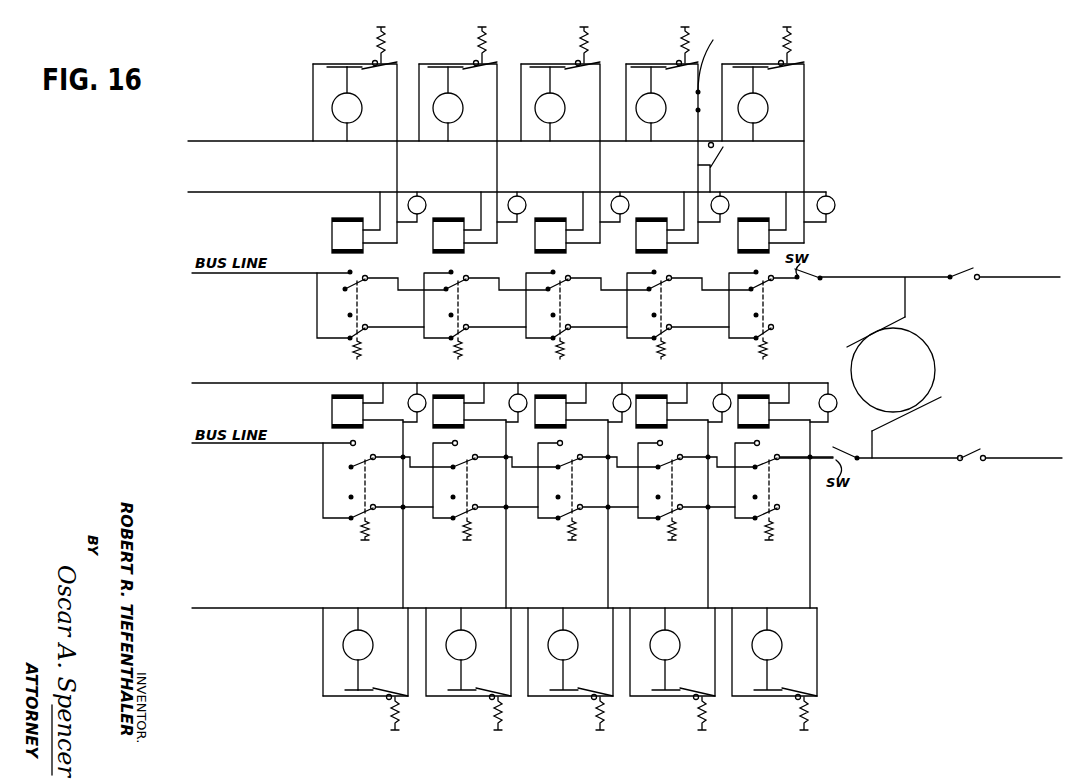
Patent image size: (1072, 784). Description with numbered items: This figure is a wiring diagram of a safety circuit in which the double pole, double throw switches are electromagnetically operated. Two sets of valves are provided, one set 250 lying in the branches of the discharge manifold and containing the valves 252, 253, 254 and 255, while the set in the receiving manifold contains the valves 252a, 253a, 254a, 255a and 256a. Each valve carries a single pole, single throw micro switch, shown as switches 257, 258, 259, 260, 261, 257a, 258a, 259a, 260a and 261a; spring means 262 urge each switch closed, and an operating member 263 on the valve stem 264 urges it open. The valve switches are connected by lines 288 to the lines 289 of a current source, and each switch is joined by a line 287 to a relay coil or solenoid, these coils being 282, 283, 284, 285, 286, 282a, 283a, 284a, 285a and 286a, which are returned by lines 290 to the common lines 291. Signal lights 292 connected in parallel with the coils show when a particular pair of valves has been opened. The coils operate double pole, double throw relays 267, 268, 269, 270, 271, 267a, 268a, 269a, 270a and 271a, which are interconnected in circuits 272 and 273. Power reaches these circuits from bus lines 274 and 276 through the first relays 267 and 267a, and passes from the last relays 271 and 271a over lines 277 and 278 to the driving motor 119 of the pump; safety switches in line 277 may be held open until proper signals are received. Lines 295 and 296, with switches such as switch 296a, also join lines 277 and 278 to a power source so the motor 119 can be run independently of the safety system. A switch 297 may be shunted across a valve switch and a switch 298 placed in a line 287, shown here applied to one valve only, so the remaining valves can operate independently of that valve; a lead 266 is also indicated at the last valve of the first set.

The driving motor 119 is at (934, 355).
The set of valves 250 is at (778, 106).
The valve 252 is at (342, 119).
The valve 253 is at (443, 119).
The valve 254 is at (545, 119).
The valve 255 is at (646, 119).
The single pole, single throw switch 257 is at (377, 78).
The single pole, single throw switch 258 is at (470, 78).
The single pole, single throw switch 259 is at (572, 78).
The single pole, single throw switch 260 is at (671, 78).
The single pole, single throw switch 261 is at (828, 655).
The spring means 262 is at (482, 27).
The operating member 263 is at (345, 690).
The valve stem 264 is at (352, 66).
The voltmeter lead 266 is at (750, 146).
The double pole, double throw relay 267 is at (395, 315).
The double pole, double throw relay 268 is at (485, 315).
The double pole, double throw relay 269 is at (587, 315).
The double pole, double throw relay 270 is at (689, 315).
The double pole, double throw relay 271 is at (768, 315).
The double pole, double throw relay 267a is at (379, 483).
The double pole, double throw relay 268a is at (481, 483).
The double pole, double throw relay 269a is at (586, 483).
The double pole, double throw relay 270a is at (686, 483).
The double pole, double throw relay 271a is at (783, 483).
The circuit 272 is at (317, 313).
The circuit 273 is at (323, 496).
The bus line 274 is at (228, 276).
The bus line 276 is at (220, 448).
The line 277 is at (880, 277).
The line 278 is at (873, 444).
The relay coil 282 is at (332, 238).
The relay coil 283 is at (435, 250).
The relay coil 284 is at (538, 250).
The relay coil 285 is at (638, 250).
The relay coil 286 is at (740, 250).
The relay coil 282a is at (335, 398).
The relay coil 283a is at (436, 398).
The relay coil 284a is at (538, 398).
The relay coil 285a is at (640, 398).
The relay coil 286a is at (742, 398).
The line 287 is at (497, 172).
The line 288 is at (313, 114).
The line of source of current 289 is at (245, 141).
The line 290 is at (380, 205).
The common line 291 is at (283, 192).
The signal 292 is at (529, 205).
The line 295 is at (1032, 277).
The line 296 is at (1040, 458).
The switch 296a is at (969, 355).
The switch 297 is at (723, 168).
The switch 298 is at (713, 67).
The valve 252a is at (358, 608).
The valve 253a is at (461, 608).
The valve 254a is at (563, 608).
The valve 255a is at (665, 608).
The valve 256a is at (767, 608).
The single pole, single throw switch 257a is at (408, 708).
The single pole, single throw switch 258a is at (511, 708).
The single pole, single throw switch 259a is at (612, 708).
The single pole, single throw switch 260a is at (713, 708).
The single pole, single throw switch 261a is at (817, 708).